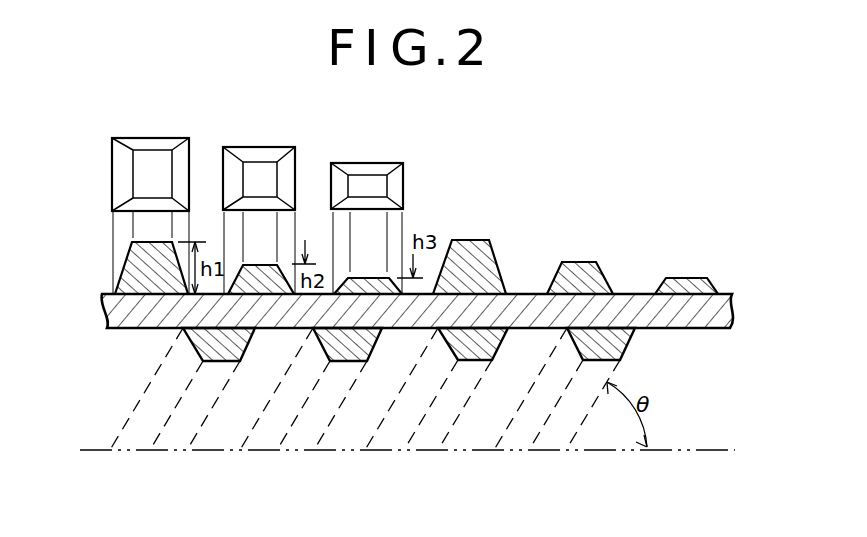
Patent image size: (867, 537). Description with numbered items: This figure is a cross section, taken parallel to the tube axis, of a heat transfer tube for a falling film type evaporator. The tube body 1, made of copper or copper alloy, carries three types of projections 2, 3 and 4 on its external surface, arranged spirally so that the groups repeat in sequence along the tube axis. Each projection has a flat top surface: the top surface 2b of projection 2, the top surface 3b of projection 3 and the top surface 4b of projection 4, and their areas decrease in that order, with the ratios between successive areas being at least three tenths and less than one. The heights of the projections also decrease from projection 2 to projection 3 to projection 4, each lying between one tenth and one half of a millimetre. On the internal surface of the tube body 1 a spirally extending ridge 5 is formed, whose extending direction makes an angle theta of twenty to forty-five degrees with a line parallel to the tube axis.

The tube body 1 is at (704, 310).
The projection 2 is at (142, 267).
The top surface 2b is at (141, 168).
The projection 3 is at (274, 155).
The top surface 3b is at (253, 173).
The projection 4 is at (383, 166).
The top surface 4b is at (361, 183).
The ridge 5 is at (612, 345).